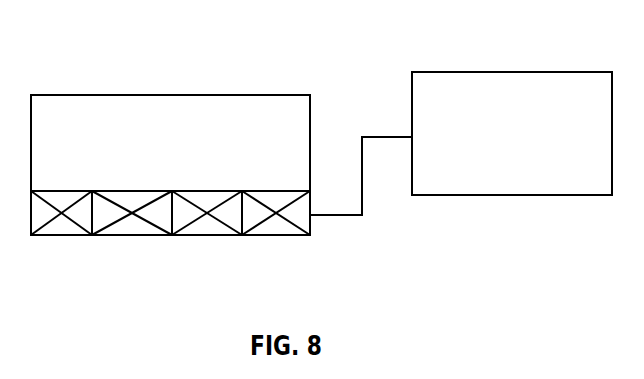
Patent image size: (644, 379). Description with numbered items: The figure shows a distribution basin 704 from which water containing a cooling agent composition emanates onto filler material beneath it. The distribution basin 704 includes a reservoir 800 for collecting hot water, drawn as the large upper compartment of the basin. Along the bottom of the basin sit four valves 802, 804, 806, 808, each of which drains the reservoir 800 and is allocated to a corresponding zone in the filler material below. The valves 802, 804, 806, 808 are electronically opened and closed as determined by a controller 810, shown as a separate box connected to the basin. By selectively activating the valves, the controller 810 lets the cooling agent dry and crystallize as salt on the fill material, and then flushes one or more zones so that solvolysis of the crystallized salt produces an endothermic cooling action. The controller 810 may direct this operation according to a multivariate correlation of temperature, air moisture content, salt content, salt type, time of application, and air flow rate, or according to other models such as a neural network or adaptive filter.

The distribution basin 704 is at (288, 63).
The reservoir 800 is at (184, 174).
The valve 802 is at (58, 237).
The valve 804 is at (133, 237).
The valve 806 is at (205, 237).
The valve 808 is at (280, 237).
The controller 810 is at (503, 72).